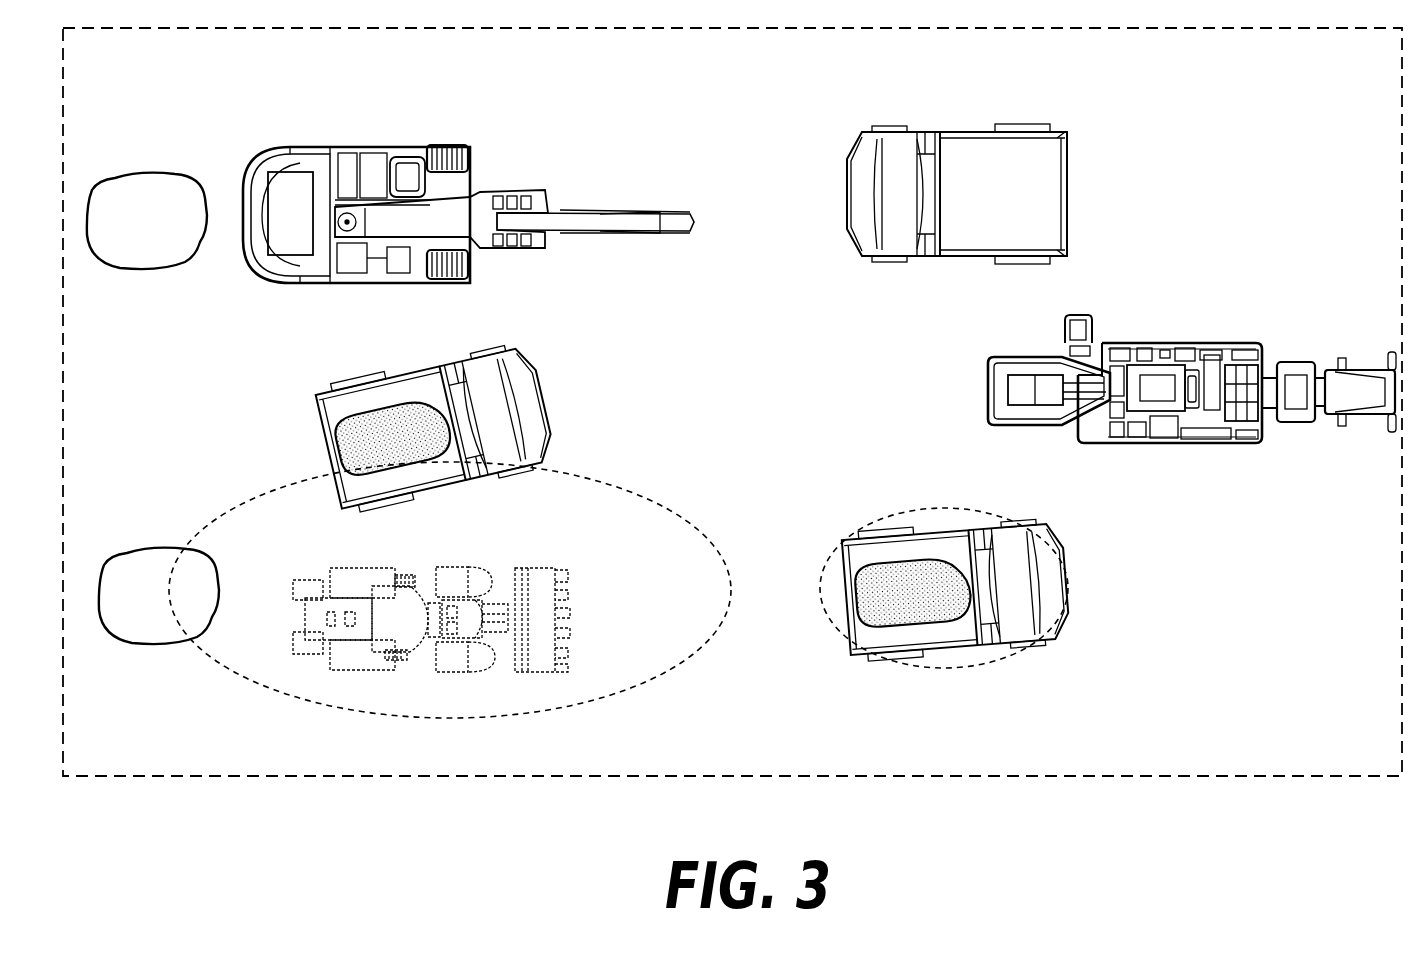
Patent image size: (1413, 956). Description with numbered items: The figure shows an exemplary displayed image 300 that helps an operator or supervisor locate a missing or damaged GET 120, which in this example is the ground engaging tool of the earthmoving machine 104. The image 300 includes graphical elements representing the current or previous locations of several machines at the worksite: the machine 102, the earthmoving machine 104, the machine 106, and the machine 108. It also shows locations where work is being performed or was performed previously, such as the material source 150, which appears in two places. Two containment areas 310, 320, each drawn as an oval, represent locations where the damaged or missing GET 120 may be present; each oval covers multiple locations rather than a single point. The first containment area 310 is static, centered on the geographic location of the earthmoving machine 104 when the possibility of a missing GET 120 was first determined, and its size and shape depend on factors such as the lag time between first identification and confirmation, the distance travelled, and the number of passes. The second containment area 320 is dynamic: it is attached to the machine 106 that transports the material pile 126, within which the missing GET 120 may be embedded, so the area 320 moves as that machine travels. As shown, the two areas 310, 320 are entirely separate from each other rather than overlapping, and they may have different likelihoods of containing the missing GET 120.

The displayed image 300 is at (141, 72).
The machine 102 is at (567, 176).
The earthmoving machine 104 is at (491, 603).
The machine 106 is at (730, 393).
The machine 108 is at (1285, 328).
The GET 120 is at (573, 631).
The material pile 126 is at (428, 405).
The material source 150 is at (136, 258).
The containment area 310 is at (658, 498).
The containment area 320 is at (824, 574).